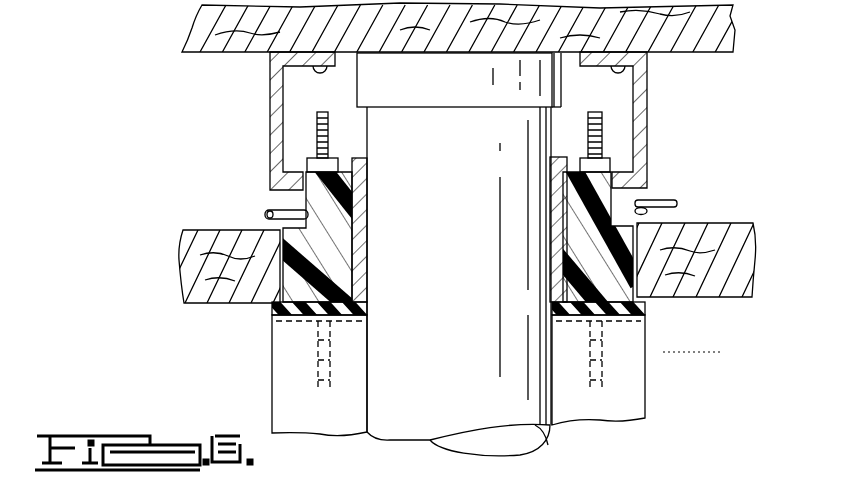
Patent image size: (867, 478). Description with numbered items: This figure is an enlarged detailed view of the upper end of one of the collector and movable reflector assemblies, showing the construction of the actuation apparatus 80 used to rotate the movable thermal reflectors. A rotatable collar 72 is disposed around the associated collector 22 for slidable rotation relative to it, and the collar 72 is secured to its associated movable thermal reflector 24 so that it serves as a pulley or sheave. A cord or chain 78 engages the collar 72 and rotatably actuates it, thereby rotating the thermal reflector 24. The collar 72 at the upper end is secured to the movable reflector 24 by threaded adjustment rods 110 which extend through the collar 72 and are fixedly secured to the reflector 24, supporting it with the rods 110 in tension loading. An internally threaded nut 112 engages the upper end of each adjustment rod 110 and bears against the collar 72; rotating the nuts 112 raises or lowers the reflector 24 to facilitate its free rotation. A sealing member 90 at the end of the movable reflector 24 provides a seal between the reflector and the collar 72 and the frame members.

The collector 22 is at (482, 366).
The movable thermal reflector 24 is at (340, 426).
The rotatable collar 72 is at (282, 247).
The cord or chain 78 is at (677, 206).
The actuation apparatus 80 is at (668, 192).
The sealing member 90 is at (268, 308).
The adjustment rod 110 is at (316, 117).
The nut 112 is at (307, 161).